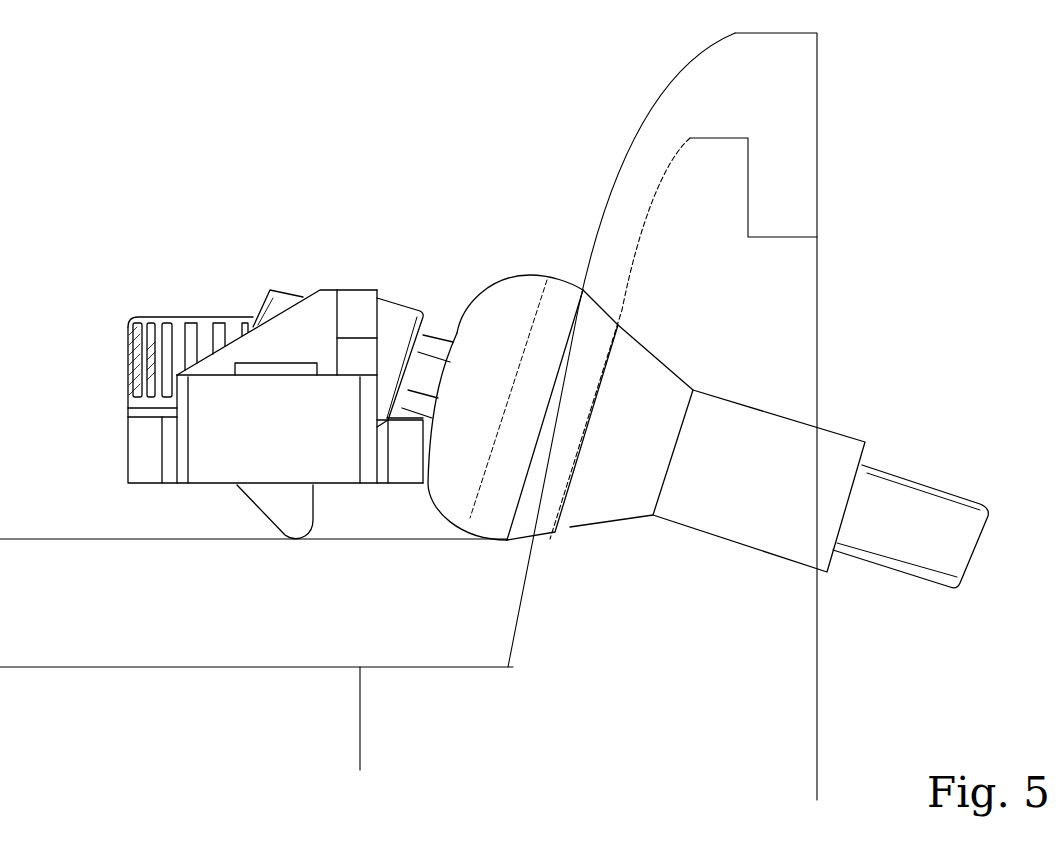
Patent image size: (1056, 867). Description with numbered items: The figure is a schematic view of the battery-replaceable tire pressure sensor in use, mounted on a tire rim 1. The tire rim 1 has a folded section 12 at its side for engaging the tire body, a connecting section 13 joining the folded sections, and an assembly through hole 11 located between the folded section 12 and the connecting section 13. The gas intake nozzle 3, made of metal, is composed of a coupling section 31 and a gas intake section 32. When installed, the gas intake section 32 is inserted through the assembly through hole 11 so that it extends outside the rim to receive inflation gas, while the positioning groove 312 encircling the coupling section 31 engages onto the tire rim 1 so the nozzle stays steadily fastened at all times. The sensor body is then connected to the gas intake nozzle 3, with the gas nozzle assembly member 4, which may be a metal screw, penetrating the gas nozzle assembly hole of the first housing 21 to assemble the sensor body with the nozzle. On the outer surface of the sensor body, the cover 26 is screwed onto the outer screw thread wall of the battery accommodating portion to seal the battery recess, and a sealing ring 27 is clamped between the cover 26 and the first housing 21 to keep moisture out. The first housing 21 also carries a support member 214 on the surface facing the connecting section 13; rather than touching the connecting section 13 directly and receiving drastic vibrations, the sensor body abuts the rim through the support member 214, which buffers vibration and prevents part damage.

The tire rim 1 is at (820, 168).
The assembly through hole 11 is at (600, 318).
The folded section 12 is at (640, 195).
The connecting section 13 is at (107, 645).
The first housing 21 is at (131, 465).
The cover 26 is at (143, 317).
The sealing ring 27 is at (128, 410).
The support member 214 is at (290, 537).
The gas intake nozzle 3 is at (738, 553).
The coupling section 31 is at (430, 305).
The positioning groove 312 is at (557, 483).
The gas intake section 32 is at (922, 477).
The gas nozzle assembly member 4 is at (283, 290).